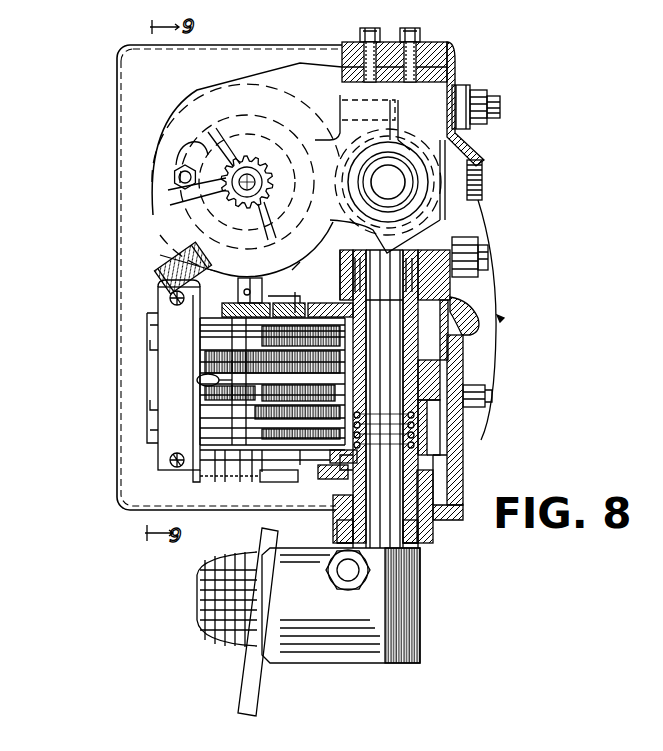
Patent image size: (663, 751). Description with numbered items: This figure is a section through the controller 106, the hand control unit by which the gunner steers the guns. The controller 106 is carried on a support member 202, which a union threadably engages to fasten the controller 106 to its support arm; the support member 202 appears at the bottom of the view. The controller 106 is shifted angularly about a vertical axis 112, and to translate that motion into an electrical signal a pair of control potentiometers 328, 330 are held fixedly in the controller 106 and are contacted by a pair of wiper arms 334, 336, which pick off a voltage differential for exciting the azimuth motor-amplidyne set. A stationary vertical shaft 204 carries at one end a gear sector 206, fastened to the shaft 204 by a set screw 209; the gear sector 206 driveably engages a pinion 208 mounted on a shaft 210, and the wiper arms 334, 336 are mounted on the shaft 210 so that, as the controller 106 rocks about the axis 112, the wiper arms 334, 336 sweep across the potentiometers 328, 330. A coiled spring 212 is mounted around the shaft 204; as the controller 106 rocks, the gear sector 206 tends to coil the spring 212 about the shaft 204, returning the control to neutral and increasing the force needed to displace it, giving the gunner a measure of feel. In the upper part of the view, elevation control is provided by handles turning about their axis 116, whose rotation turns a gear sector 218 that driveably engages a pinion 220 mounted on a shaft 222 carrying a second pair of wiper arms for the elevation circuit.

The controller 106 is at (511, 320).
The vertical axis 112 is at (387, 540).
The axis of handles 116 is at (400, 185).
The support member 202 is at (325, 648).
The stationary vertical shaft 204 is at (403, 478).
The gear sector 206 is at (302, 295).
The pinion 208 is at (262, 283).
The set screw 209 is at (447, 357).
The shaft 210 is at (316, 275).
The coiled spring 212 is at (390, 408).
The gear sector 218 is at (340, 96).
The pinion 220 is at (242, 166).
The shaft 222 is at (228, 195).
The control potentiometer 328 is at (200, 343).
The control potentiometer 330 is at (200, 397).
The wiper arm 334 is at (200, 384).
The wiper arm 336 is at (200, 378).